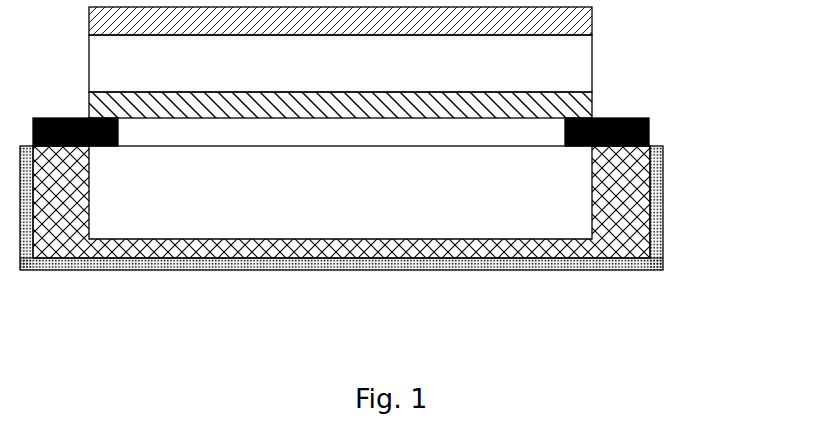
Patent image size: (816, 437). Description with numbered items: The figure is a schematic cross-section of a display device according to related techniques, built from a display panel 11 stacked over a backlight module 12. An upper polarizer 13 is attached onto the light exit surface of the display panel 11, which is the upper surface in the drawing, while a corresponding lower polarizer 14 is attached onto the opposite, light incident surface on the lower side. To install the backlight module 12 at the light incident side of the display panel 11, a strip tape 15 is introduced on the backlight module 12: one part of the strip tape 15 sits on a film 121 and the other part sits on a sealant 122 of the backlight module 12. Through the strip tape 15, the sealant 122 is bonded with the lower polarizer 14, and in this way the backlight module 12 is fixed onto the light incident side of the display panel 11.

The display panel 11 is at (606, 67).
The backlight module 12 is at (384, 244).
The film 121 is at (497, 199).
The sealant 122 is at (620, 173).
The upper polarizer 13 is at (606, 25).
The lower polarizer 14 is at (606, 113).
The strip tape 15 is at (663, 140).